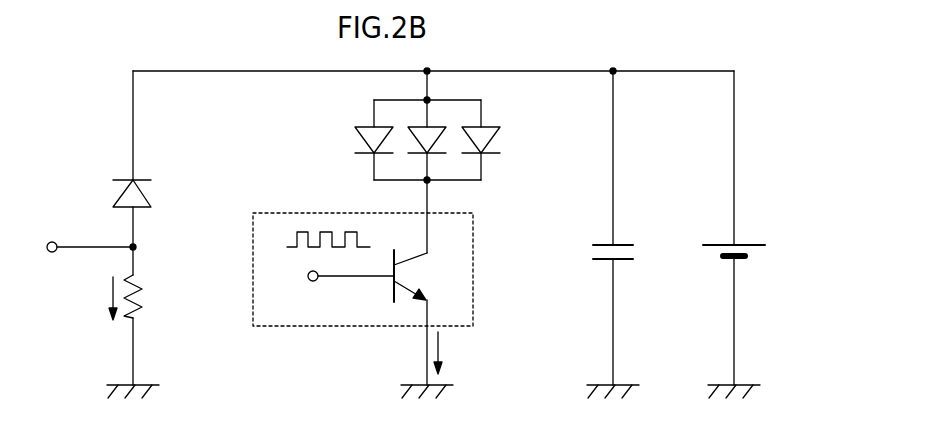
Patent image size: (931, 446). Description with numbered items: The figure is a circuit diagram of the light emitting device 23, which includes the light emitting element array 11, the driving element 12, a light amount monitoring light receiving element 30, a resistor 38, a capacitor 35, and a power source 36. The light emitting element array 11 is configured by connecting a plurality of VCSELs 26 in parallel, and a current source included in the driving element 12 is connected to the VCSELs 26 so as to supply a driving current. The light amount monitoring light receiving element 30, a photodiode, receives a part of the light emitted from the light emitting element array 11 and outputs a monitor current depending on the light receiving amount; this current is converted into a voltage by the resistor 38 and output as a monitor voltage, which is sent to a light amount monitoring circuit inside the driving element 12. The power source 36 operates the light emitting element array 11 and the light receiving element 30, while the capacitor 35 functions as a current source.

The light emitting device 23 is at (728, 32).
The light emitting element array 11 is at (501, 118).
The VCSEL 26 is at (495, 138).
The driving element 12 is at (305, 328).
The light amount monitoring light receiving element 30 is at (143, 193).
The resistor 38 is at (146, 318).
The capacitor 35 is at (620, 243).
The power source 36 is at (748, 243).